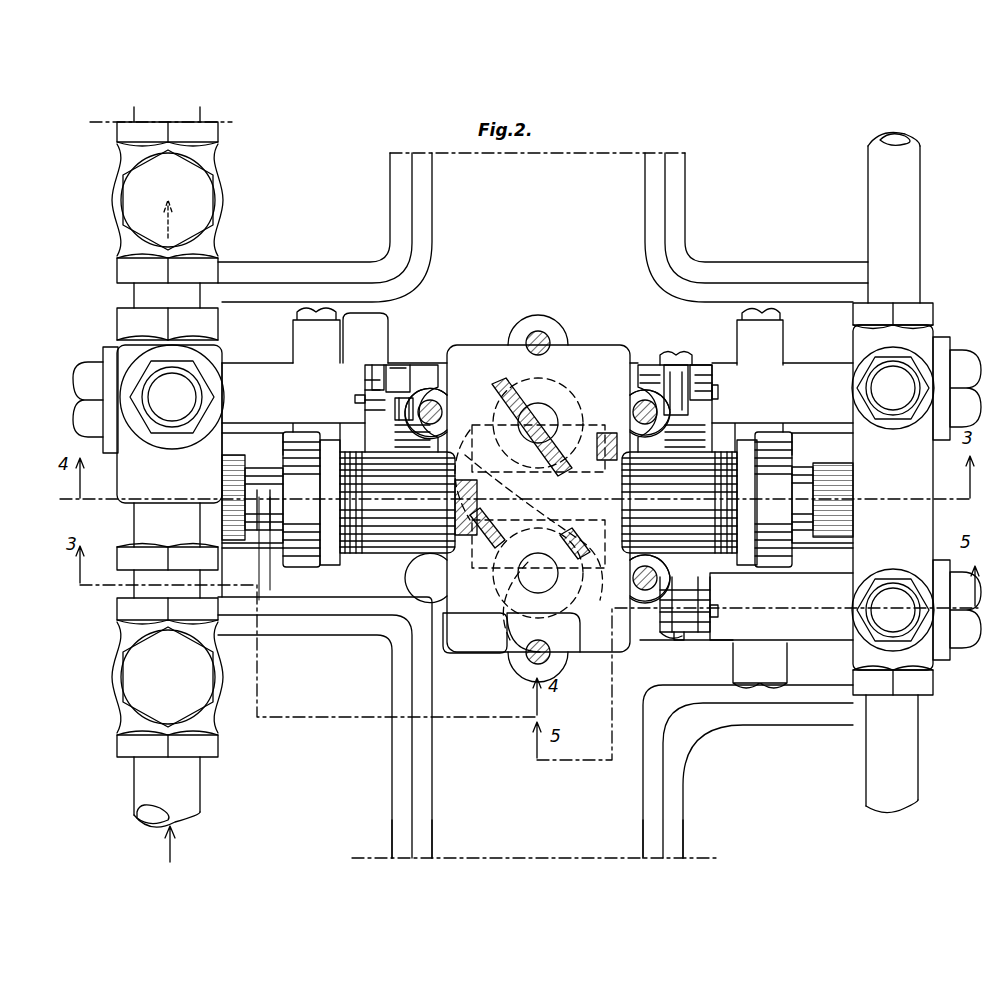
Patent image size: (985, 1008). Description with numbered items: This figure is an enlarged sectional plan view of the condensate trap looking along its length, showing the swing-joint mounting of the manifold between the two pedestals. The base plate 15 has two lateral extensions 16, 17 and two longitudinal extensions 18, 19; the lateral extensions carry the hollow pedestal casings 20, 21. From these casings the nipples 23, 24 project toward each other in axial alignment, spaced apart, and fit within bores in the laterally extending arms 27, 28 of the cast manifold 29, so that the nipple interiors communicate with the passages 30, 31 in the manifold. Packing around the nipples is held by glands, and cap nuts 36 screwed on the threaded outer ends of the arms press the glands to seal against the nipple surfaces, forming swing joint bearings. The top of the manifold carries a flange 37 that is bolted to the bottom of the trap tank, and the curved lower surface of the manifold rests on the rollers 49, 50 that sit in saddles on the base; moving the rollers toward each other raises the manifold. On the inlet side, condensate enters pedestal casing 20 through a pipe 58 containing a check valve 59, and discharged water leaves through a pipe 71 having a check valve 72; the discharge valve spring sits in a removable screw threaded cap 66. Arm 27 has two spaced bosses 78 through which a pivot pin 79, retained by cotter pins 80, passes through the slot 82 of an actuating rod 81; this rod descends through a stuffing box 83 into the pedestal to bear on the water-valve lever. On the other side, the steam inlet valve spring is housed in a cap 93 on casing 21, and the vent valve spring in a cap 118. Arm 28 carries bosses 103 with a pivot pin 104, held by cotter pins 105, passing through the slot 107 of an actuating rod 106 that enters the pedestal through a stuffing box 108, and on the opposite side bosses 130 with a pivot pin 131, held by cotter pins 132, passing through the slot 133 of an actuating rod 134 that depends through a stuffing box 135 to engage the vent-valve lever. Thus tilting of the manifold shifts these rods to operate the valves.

The base plate 15 is at (690, 766).
The lateral extension 16 is at (320, 618).
The lateral extension 17 is at (805, 675).
The longitudinal extension 18 is at (618, 168).
The longitudinal extension 19 is at (438, 780).
The hollow pedestal casing 20 is at (128, 472).
The hollow pedestal casing 21 is at (915, 518).
The nipple 23 is at (262, 465).
The nipple 24 is at (817, 472).
The arm 27 is at (382, 560).
The arm 28 is at (730, 565).
The manifold 29 is at (520, 395).
The passage 30 is at (525, 440).
The passage 31 is at (522, 565).
The cap nut 36 is at (300, 558).
The flange 37 is at (480, 608).
The roller 49 is at (540, 560).
The roller 50 is at (548, 420).
The pipe 58 is at (200, 786).
The check valve 59 is at (130, 682).
The cap 66 is at (190, 396).
The pipe 71 is at (210, 122).
The check valve 72 is at (205, 196).
The bosses 78 is at (362, 392).
The pivot pin 79 is at (354, 399).
The cotter pins 80 is at (365, 405).
The actuating rod 81 is at (385, 376).
The slot 82 is at (394, 410).
The stuffing box 83 is at (396, 372).
The cap 93 is at (880, 390).
The bosses 103 is at (652, 372).
The pivot pin 104 is at (719, 392).
The cotter pins 105 is at (718, 400).
The actuating rod 106 is at (674, 372).
The slot 107 is at (700, 372).
The stuffing box 108 is at (675, 360).
The cap 118 is at (882, 592).
The bosses 130 is at (640, 628).
The pivot pin 131 is at (718, 612).
The cotter pins 132 is at (648, 610).
The slot 133 is at (668, 638).
The actuating rod 134 is at (680, 642).
The stuffing box 135 is at (618, 640).